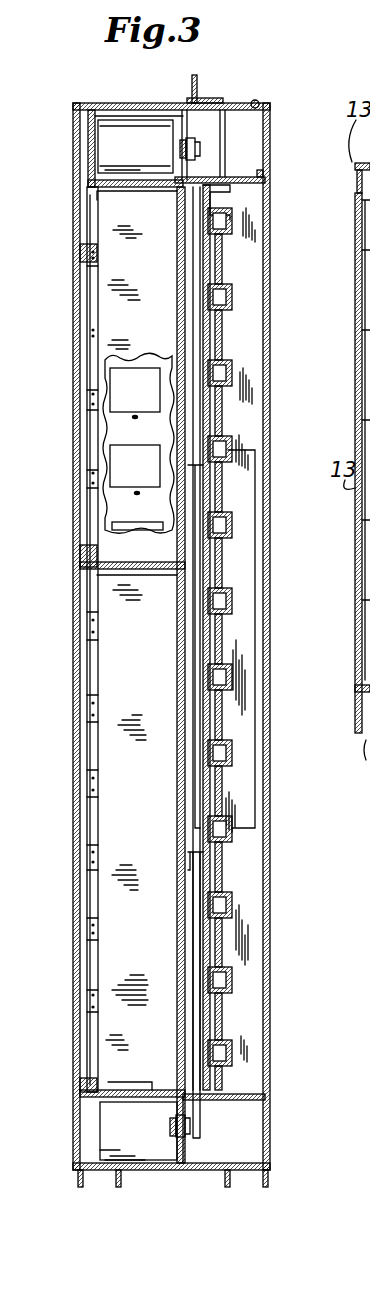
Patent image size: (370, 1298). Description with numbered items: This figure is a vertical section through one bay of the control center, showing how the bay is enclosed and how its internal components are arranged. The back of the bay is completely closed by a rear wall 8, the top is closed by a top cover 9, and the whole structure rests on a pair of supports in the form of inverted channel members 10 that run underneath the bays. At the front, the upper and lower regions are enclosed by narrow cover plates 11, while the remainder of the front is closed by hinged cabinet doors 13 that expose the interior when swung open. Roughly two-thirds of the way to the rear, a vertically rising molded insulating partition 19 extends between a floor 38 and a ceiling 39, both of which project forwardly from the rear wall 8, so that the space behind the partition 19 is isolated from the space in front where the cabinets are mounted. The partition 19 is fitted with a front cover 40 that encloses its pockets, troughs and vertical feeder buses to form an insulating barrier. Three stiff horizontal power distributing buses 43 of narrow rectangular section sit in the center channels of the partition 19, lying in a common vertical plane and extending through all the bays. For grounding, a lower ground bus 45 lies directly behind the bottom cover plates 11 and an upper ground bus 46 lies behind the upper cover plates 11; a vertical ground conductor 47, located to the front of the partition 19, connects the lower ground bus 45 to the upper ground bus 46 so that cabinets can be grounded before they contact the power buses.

The rear wall 8 is at (270, 868).
The top cover 9 is at (128, 104).
The inverted channel members 10 is at (119, 1183).
The cover plates 11 is at (75, 130).
The cabinet doors 13 is at (75, 306).
The insulating partition 19 is at (236, 294).
The floor 38 is at (240, 1105).
The ceiling 39 is at (245, 177).
The front cover 40 is at (205, 640).
The horizontal power distributing buses 43 is at (230, 558).
The lower ground bus 45 is at (170, 1125).
The upper ground bus 46 is at (181, 140).
The vertical ground conductor 47 is at (193, 900).